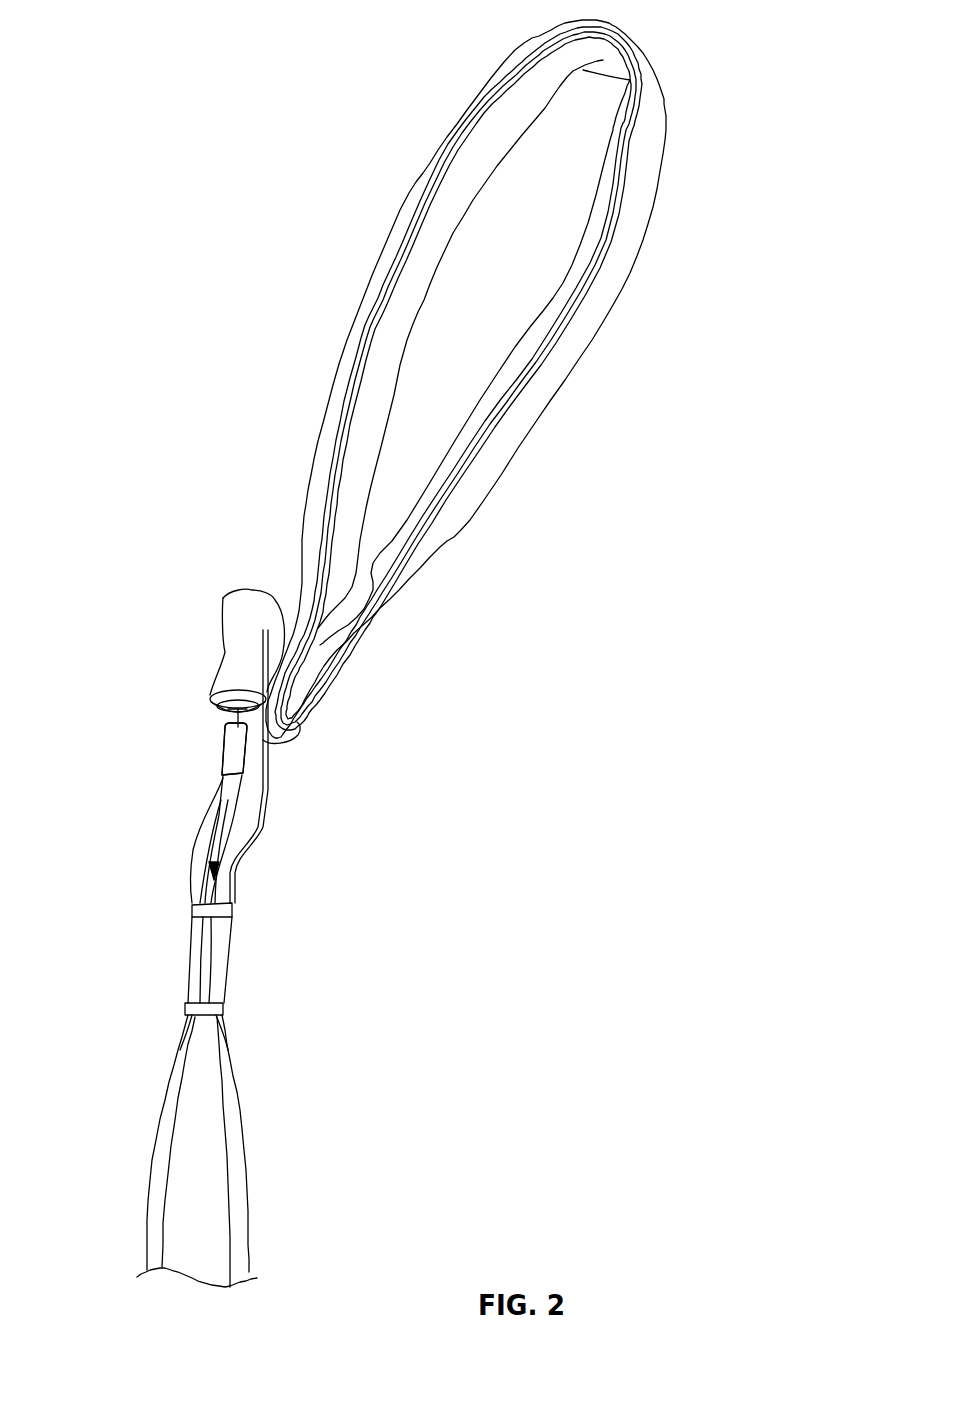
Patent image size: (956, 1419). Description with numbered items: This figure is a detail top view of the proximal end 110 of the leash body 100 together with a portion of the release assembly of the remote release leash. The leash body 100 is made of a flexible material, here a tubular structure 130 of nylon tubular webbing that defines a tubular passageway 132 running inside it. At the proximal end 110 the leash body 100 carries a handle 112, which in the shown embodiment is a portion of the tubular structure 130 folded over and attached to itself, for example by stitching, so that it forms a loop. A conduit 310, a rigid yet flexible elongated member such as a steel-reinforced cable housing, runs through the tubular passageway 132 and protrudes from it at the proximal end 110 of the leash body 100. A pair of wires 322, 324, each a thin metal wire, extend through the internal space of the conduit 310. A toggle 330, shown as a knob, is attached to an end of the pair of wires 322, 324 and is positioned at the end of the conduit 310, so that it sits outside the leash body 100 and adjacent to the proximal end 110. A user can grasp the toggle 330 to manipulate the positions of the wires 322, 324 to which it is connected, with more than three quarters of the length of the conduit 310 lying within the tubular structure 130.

The leash body 100 is at (372, 653).
The proximal end 110 is at (303, 613).
The handle 112 is at (353, 340).
The tubular structure 130 is at (195, 1103).
The tubular passageway 132 is at (250, 840).
The conduit 310 is at (223, 810).
The wire 322 is at (228, 712).
The wire 324 is at (234, 749).
The toggle 330 is at (248, 615).